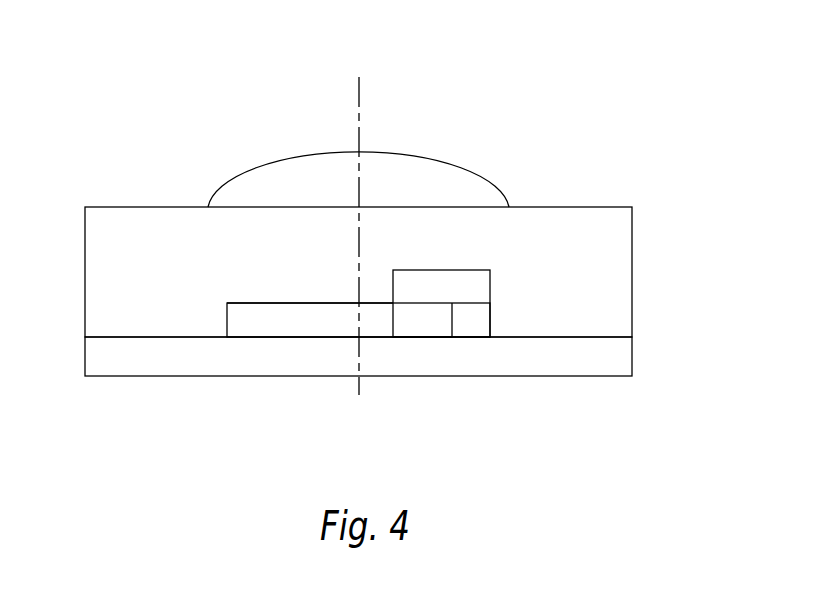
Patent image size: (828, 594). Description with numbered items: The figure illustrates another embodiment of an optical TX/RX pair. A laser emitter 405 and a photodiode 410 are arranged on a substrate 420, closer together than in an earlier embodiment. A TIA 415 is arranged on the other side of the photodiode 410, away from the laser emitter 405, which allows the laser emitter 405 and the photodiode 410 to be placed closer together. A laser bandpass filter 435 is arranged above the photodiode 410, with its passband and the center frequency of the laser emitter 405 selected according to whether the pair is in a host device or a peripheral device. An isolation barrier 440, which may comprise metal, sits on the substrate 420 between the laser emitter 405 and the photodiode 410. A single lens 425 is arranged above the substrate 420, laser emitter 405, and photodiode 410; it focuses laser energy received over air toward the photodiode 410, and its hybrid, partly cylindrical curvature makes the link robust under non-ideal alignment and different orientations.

The laser emitter 405 is at (255, 327).
The photodiode 410 is at (428, 326).
The TIA 415 is at (472, 327).
The substrate 420 is at (628, 348).
The lens 425 is at (438, 168).
The laser bandpass filter 435 is at (492, 283).
The isolation barrier 440 is at (375, 312).